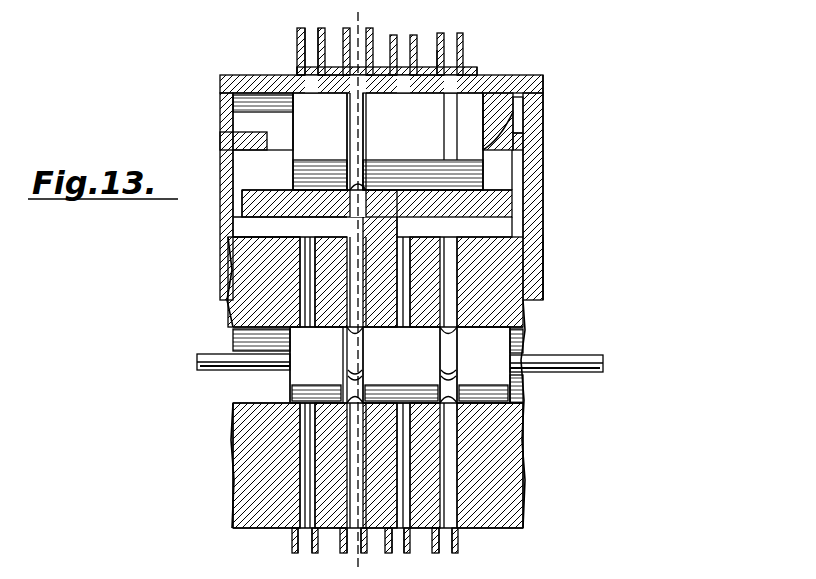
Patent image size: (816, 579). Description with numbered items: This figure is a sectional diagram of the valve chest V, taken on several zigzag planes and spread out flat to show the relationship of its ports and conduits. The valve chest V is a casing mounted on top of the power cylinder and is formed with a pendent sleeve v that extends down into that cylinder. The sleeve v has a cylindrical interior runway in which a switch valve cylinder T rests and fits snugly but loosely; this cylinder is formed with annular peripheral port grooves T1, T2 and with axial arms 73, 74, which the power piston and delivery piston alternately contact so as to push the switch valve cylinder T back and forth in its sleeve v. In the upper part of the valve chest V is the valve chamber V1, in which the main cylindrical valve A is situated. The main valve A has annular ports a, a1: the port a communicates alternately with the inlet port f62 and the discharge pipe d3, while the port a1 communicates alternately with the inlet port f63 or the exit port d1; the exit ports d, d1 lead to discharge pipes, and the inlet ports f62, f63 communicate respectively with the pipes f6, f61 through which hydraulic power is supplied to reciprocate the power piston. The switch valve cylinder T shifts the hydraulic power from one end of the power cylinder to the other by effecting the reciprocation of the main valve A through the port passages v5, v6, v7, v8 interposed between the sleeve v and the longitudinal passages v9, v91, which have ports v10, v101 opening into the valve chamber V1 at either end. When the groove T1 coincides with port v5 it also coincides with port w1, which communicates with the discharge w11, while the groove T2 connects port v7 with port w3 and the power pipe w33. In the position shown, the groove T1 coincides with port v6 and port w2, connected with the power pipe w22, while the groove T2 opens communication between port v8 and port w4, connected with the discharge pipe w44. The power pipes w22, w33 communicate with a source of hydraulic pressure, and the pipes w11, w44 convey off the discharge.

The valve chamber V1 is at (250, 118).
The pipe f6 is at (310, 30).
The exit port d is at (369, 22).
The exit port d1 is at (403, 50).
The discharge pipe d3 is at (437, 58).
The pipe f61 is at (448, 55).
The inlet port f62 is at (478, 72).
The inlet port f63 is at (310, 83).
The annular port a1 is at (347, 113).
The main cylindrical valve A is at (423, 141).
The annular port a is at (450, 128).
The port v101 is at (522, 193).
The longitudinal passage v91 is at (495, 226).
The port passage v7 is at (405, 253).
The port passage v8 is at (543, 298).
The port v10 is at (236, 216).
The longitudinal passage v9 is at (232, 252).
The port passage v5 is at (240, 237).
The port passage v6 is at (302, 290).
The valve chest V is at (640, 142).
The pendent sleeve v is at (516, 347).
The axial arm 73 is at (197, 362).
The axial arm 74 is at (603, 363).
The annular peripheral port groove T1 is at (346, 358).
The switch valve cylinder T is at (401, 365).
The annular peripheral port groove T2 is at (458, 355).
The port w1 is at (233, 428).
The port w2 is at (305, 450).
The discharge pipe w11 is at (293, 537).
The power pipe w22 is at (340, 542).
The power pipe w33 is at (412, 543).
The discharge pipe w44 is at (460, 542).
The port w4 is at (520, 428).
The port w3 is at (402, 463).